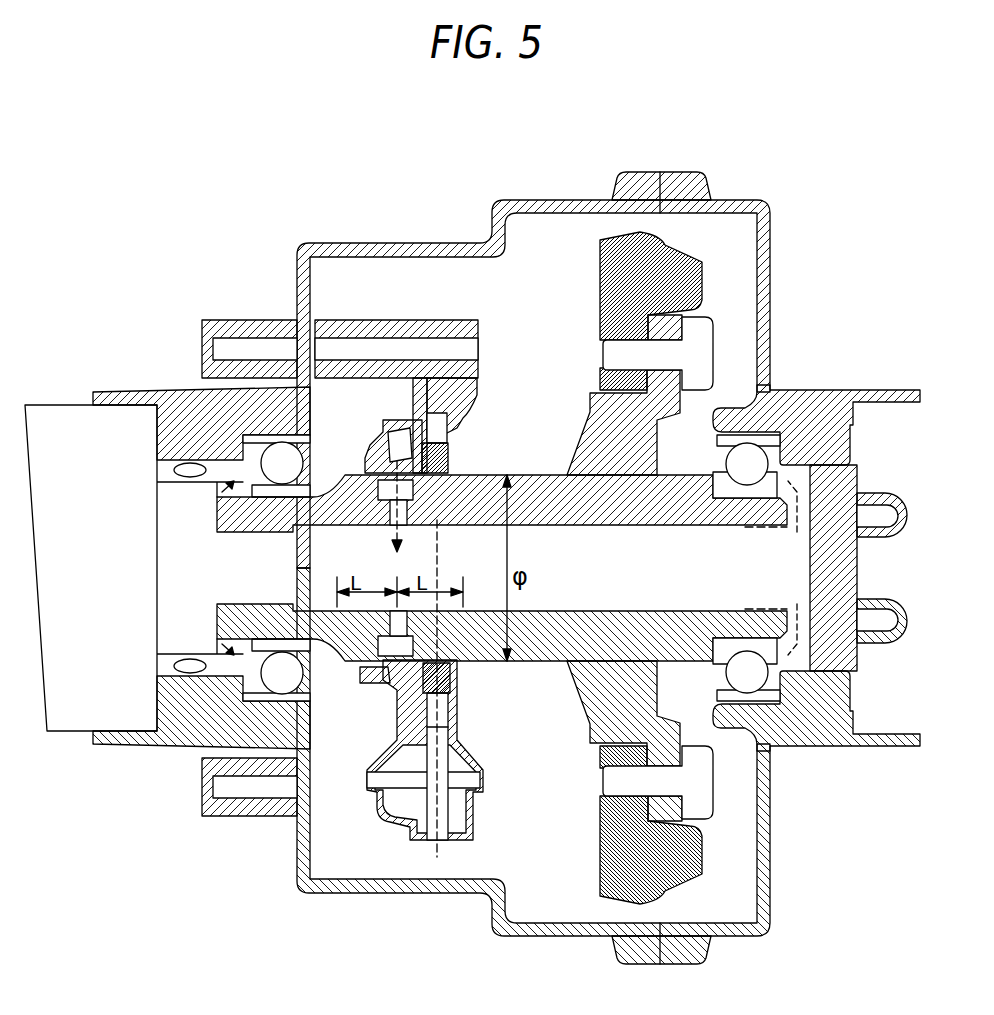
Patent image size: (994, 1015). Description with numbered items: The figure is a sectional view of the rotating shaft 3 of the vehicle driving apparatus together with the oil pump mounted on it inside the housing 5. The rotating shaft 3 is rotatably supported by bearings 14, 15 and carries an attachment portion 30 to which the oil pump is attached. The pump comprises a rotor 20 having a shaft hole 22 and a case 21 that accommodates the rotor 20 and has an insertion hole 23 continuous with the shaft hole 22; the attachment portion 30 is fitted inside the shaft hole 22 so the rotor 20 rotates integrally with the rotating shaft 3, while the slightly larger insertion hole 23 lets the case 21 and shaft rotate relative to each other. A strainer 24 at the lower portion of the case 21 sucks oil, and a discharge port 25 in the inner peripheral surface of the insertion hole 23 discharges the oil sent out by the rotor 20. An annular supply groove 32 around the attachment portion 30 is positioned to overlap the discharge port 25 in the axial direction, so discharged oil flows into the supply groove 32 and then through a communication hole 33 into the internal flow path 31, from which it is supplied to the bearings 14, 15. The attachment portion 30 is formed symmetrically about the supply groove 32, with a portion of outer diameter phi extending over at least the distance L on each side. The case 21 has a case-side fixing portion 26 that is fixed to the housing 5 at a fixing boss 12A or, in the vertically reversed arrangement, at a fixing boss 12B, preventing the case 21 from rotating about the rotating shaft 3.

The housing 5 is at (331, 242).
The fixing boss 12A is at (218, 320).
The case-side fixing portion 26 is at (432, 320).
The rotating shaft 3 is at (669, 463).
The discharge port 25 is at (378, 455).
The insertion hole 23 is at (372, 488).
The shaft hole 22 is at (452, 470).
The supply groove 32 is at (385, 495).
The communication hole 33 is at (395, 543).
The internal flow path 31 is at (717, 527).
The bearing 15 is at (247, 690).
The fixing boss 12B is at (210, 816).
The case 21 is at (378, 819).
The strainer 24 is at (453, 788).
The rotor 20 is at (450, 720).
The attachment portion 30 is at (383, 667).
The bearing 14 is at (771, 698).